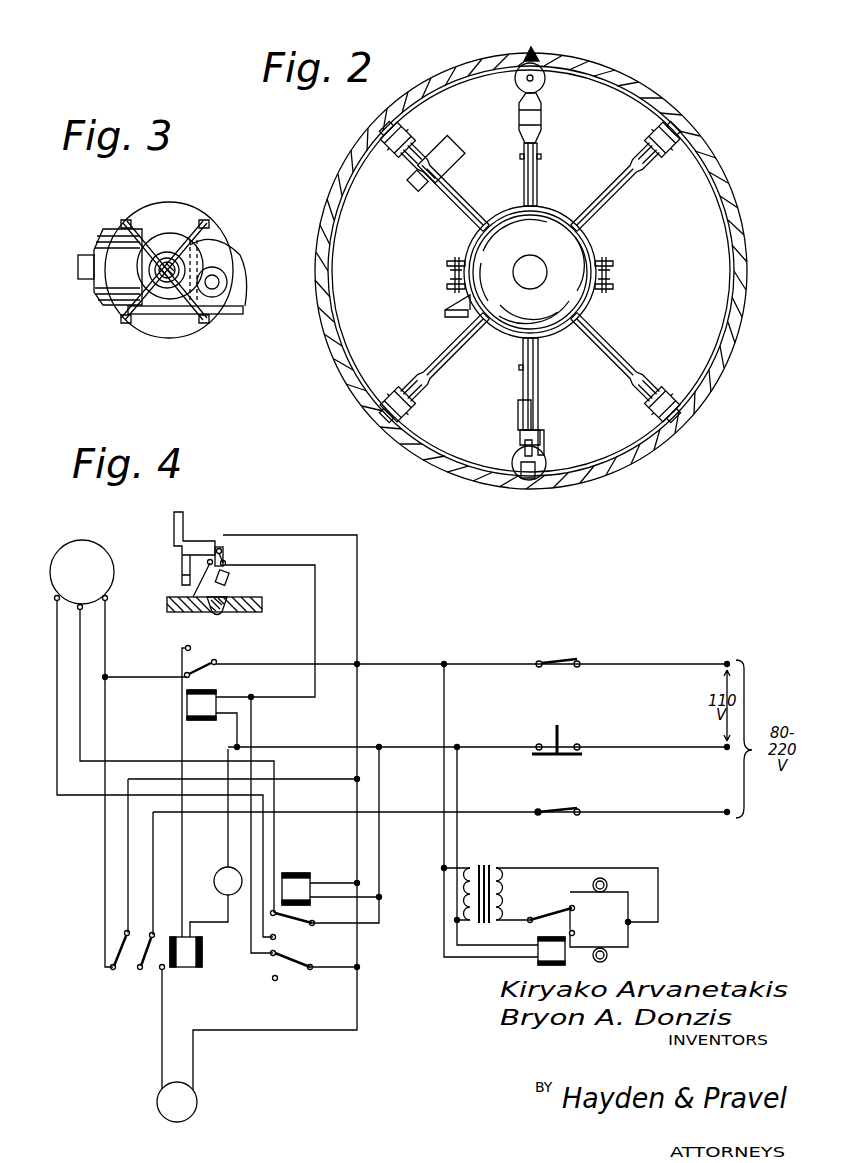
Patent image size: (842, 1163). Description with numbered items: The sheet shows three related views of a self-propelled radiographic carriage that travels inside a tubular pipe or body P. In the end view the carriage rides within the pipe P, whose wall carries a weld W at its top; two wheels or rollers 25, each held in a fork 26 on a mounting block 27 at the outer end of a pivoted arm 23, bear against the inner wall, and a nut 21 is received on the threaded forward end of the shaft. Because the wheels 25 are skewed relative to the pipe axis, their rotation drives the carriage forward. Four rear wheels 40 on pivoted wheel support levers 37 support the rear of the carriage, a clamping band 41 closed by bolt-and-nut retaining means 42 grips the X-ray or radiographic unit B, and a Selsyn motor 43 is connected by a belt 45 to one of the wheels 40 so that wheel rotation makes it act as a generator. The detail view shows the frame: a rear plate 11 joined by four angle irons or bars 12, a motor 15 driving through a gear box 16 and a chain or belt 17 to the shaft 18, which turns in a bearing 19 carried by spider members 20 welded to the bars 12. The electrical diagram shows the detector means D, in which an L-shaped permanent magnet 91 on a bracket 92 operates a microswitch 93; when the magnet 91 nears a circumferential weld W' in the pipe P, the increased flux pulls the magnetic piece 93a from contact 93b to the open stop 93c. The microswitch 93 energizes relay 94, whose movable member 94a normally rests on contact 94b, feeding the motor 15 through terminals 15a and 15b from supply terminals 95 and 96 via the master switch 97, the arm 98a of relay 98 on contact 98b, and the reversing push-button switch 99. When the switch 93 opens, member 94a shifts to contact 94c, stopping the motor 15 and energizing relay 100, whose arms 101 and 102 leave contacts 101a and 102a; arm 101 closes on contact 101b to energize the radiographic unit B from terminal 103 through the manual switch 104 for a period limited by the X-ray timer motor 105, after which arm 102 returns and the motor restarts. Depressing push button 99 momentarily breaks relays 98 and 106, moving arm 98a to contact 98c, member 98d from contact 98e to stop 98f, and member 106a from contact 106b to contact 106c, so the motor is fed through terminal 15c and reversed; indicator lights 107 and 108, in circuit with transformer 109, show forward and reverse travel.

In FIG. 2, the tubular pipe or body P is at (749, 212).
In FIG. 4, the tubular pipe or body P is at (265, 604).
In FIG. 2, the weld W is at (514, 35).
In FIG. 2, the radiographic unit B is at (575, 242).
In FIG. 4, the radiographic unit B is at (165, 1105).
In FIG. 3, the rear plate 11 is at (170, 325).
In FIG. 3, the angle irons or interconnecting bars 12 is at (203, 222).
In FIG. 3, the motor 15 is at (102, 238).
In FIG. 4, the motor 15 is at (72, 560).
In FIG. 3, the gear box 16 is at (225, 268).
In FIG. 3, the chain or belt 17 is at (222, 252).
In FIG. 3, the shaft 18 is at (154, 272).
In FIG. 3, the bearing 19 is at (150, 262).
In FIG. 3, the spider members 20 is at (140, 240).
In FIG. 2, the nut 21 is at (543, 120).
In FIG. 2, the pivoted arms 23 is at (540, 178).
In FIG. 2, the wheel or roller 25 is at (522, 90).
In FIG. 2, the fork 26 is at (545, 108).
In FIG. 2, the mounting block 27 is at (518, 417).
In FIG. 2, the pivoted wheel support lever 37 is at (466, 359).
In FIG. 2, the wheels 40 is at (405, 138).
In FIG. 2, the clamping band 41 is at (466, 250).
In FIG. 2, the retaining means 42 is at (447, 263).
In FIG. 2, the Selsyn motor 43 is at (458, 150).
In FIG. 2, the belt 45 is at (415, 182).
In FIG. 2, the L-shaped permanent magnet 91 is at (545, 445).
In FIG. 4, the L-shaped permanent magnet 91 is at (181, 570).
In FIG. 4, the bracket 92 is at (184, 520).
In FIG. 2, the microswitch 93 is at (525, 448).
In FIG. 4, the microswitch 93 is at (224, 553).
In FIG. 2, the magnetic piece 93a is at (527, 480).
In FIG. 4, the magnetic piece 93a is at (232, 578).
In FIG. 4, the electrical contact 93b is at (228, 566).
In FIG. 4, the open electrical stop 93c is at (194, 599).
In FIG. 4, the detector means D is at (165, 556).
In FIG. 4, the circumferential weld W' is at (233, 618).
In FIG. 4, the motor terminal 15a is at (108, 600).
In FIG. 4, the motor terminal 15b is at (84, 609).
In FIG. 4, the motor terminal 15c is at (55, 602).
In FIG. 4, the relay 94 is at (200, 705).
In FIG. 4, the movable contact member 94a is at (220, 668).
In FIG. 4, the electrical contact point 94b is at (185, 677).
In FIG. 4, the electrical contact point 94c is at (193, 648).
In FIG. 4, the electrical terminal 95 is at (727, 660).
In FIG. 4, the electrical terminal 96 is at (725, 745).
In FIG. 4, the master switch 97 is at (565, 656).
In FIG. 4, the relay 98 is at (300, 870).
In FIG. 4, the movable arm 98a is at (297, 925).
In FIG. 4, the electrical contact point 98b is at (300, 913).
In FIG. 4, the electrical contact 98c is at (280, 940).
In FIG. 4, the relay member 98d is at (290, 967).
In FIG. 4, the electrical contact 98e is at (270, 957).
In FIG. 4, the stop 98f is at (278, 982).
In FIG. 4, the reversing switch 99 is at (563, 757).
In FIG. 4, the relay 100 is at (190, 950).
In FIG. 4, the movable arm 101 is at (148, 960).
In FIG. 4, the electrical contact 101a is at (138, 970).
In FIG. 4, the electrical contact 101b is at (164, 970).
In FIG. 4, the movable arm 102 is at (118, 952).
In FIG. 4, the electrical contact 102a is at (110, 968).
In FIG. 4, the terminal 103 is at (727, 812).
In FIG. 4, the switch 104 is at (563, 807).
In FIG. 4, the X-ray timer motor 105 is at (222, 875).
In FIG. 4, the relay 106 is at (545, 946).
In FIG. 4, the relay member 106a is at (565, 907).
In FIG. 4, the electrical contact 106b is at (576, 911).
In FIG. 4, the electrical contact 106c is at (599, 919).
In FIG. 4, the indicator light 107 is at (605, 880).
In FIG. 4, the indicator light 108 is at (608, 956).
In FIG. 4, the transformer 109 is at (480, 862).